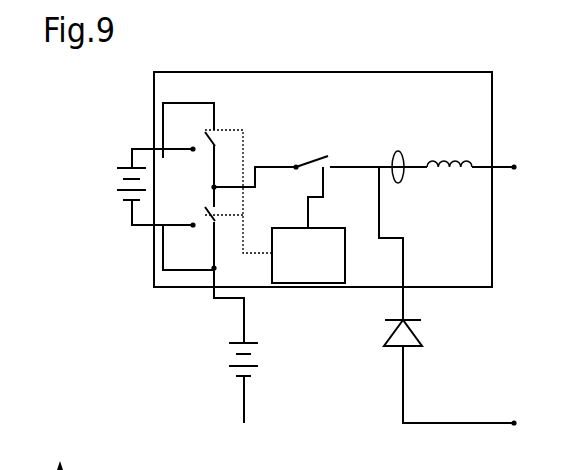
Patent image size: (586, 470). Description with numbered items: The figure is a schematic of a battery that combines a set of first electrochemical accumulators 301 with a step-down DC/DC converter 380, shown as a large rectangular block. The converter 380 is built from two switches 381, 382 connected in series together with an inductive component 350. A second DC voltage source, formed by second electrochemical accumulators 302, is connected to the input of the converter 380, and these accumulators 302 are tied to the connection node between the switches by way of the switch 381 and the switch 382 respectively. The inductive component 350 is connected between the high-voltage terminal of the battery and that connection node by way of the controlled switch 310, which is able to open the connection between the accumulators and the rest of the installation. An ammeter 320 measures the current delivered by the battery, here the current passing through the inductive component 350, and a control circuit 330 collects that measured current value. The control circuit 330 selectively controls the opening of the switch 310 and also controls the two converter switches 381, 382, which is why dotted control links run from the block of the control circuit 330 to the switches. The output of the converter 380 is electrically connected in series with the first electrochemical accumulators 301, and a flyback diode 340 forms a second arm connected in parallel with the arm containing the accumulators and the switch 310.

The DC/DC converter 380 is at (322, 72).
The switch 381 is at (203, 137).
The switch 382 is at (205, 215).
The second electrochemical accumulators 302 is at (112, 186).
The first electrochemical accumulators 301 is at (228, 360).
The controlled switch 310 is at (323, 157).
The ammeter 320 is at (398, 151).
The inductive component 350 is at (448, 162).
The control circuit 330 is at (287, 269).
The flyback diode 340 is at (381, 331).